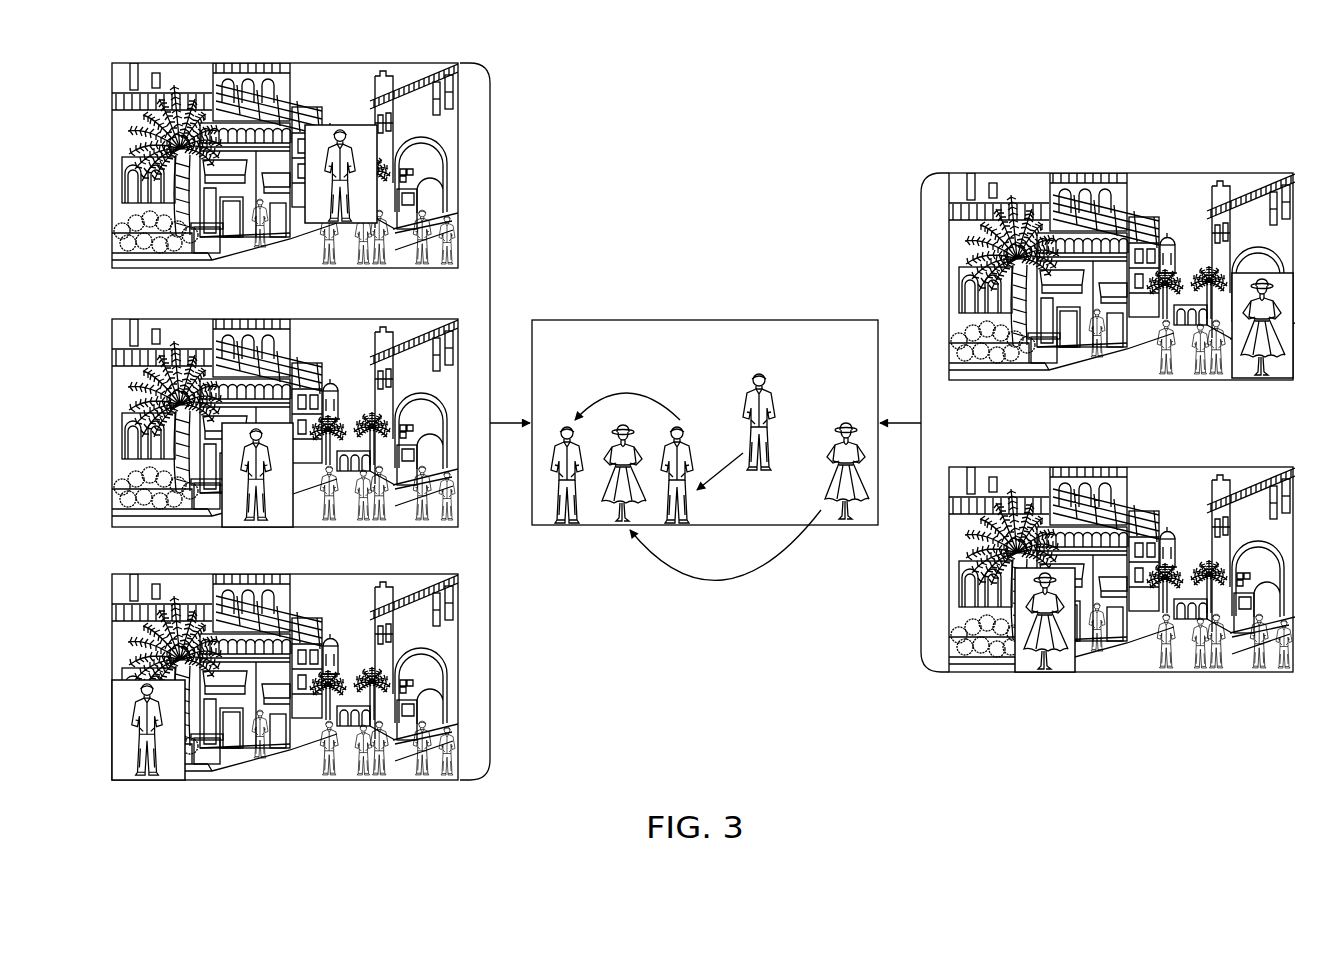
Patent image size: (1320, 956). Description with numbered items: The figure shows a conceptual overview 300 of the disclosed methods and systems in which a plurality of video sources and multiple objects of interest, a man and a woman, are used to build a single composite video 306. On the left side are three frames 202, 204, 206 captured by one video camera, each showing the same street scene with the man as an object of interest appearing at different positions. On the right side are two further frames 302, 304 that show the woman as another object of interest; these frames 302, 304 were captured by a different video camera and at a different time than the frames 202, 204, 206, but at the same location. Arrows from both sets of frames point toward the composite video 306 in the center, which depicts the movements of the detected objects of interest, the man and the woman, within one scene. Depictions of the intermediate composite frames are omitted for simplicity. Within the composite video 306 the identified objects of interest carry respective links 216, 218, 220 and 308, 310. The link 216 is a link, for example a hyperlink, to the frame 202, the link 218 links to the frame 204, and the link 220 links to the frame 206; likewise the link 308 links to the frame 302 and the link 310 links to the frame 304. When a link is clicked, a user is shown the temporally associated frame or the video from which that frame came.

The conceptual overview 300 is at (703, 399).
The frame 202 is at (365, 63).
The frame 204 is at (365, 319).
The frame 206 is at (365, 574).
The frame 302 is at (1201, 173).
The frame 304 is at (1201, 467).
The composite video 306 is at (835, 320).
The link 216 is at (762, 375).
The link 218 is at (678, 425).
The link 220 is at (563, 425).
The link 308 is at (749, 470).
The link 310 is at (622, 393).